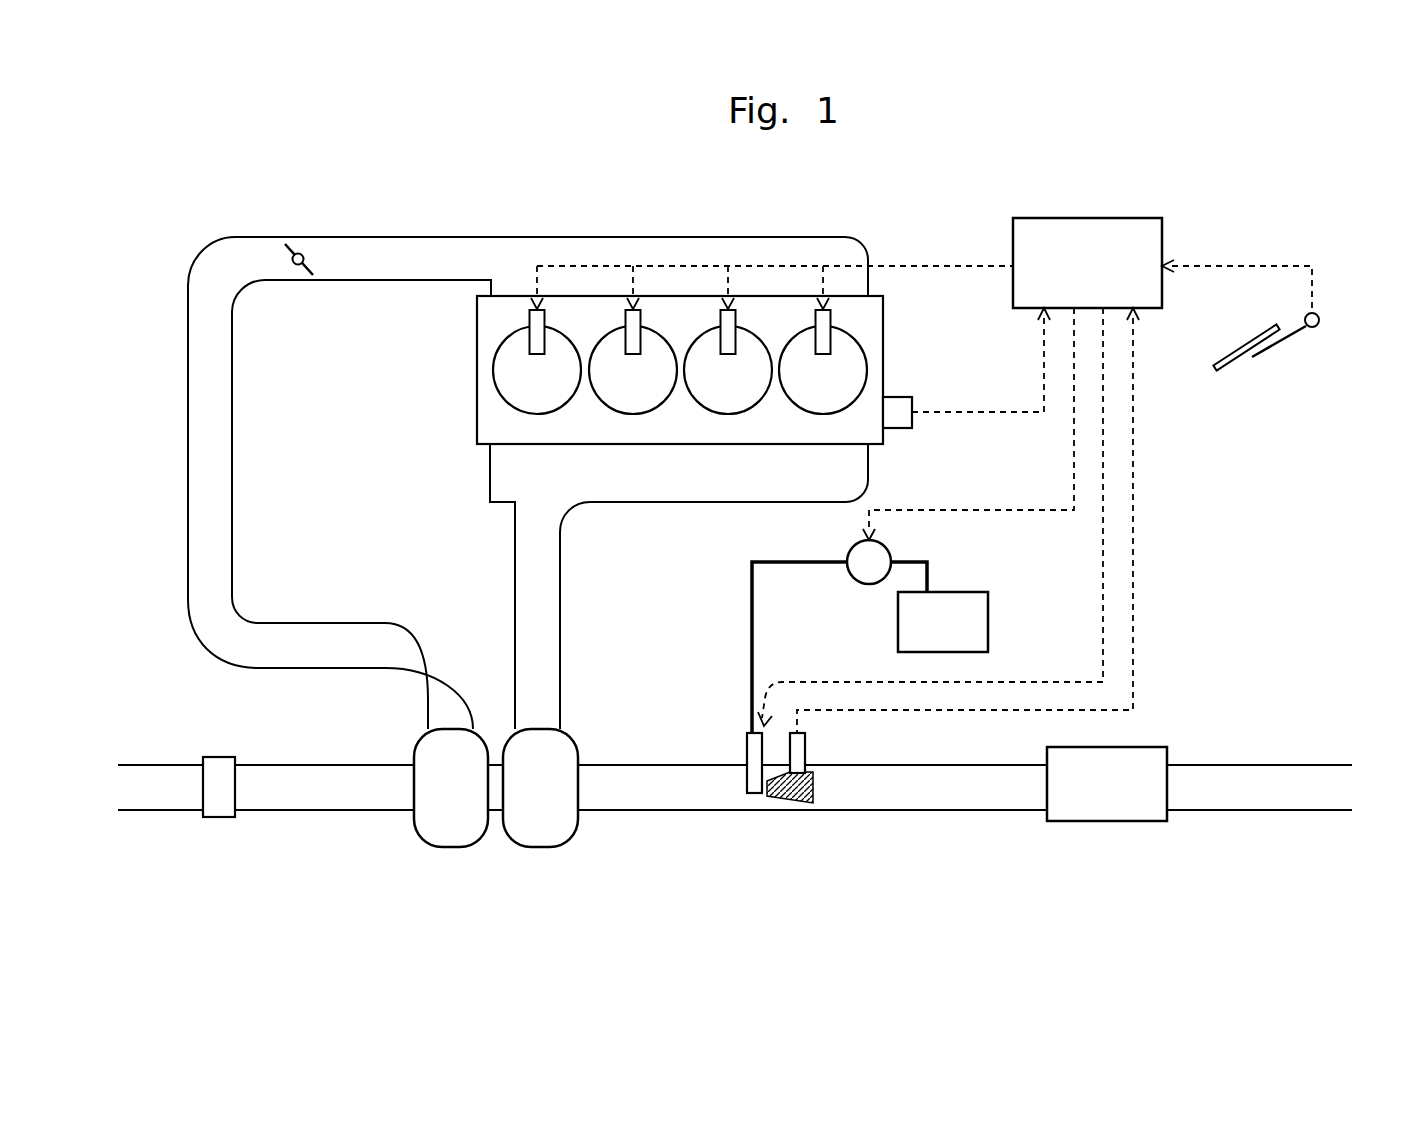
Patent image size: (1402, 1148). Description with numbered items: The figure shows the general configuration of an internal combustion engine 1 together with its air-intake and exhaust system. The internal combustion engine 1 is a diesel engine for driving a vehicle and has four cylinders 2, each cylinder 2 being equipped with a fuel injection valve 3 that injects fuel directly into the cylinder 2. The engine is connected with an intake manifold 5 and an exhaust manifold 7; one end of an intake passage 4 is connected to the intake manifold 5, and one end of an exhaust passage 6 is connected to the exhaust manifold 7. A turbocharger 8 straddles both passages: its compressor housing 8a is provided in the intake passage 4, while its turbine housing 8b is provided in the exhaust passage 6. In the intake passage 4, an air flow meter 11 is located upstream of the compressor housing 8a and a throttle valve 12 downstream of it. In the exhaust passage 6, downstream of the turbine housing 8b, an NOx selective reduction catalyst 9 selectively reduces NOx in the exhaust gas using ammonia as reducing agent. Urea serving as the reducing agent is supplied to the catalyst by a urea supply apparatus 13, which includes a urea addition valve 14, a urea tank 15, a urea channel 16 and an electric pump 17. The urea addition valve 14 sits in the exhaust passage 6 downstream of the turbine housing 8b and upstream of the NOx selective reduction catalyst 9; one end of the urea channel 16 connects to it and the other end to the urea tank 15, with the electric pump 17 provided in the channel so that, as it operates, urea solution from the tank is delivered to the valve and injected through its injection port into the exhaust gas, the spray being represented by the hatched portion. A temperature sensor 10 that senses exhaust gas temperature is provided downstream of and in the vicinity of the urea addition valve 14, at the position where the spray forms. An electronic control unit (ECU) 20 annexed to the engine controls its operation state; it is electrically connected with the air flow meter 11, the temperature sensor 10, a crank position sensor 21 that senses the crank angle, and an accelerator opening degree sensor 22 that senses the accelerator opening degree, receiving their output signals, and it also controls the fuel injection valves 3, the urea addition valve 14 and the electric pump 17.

The internal combustion engine 1 is at (477, 388).
The cylinder 2 is at (528, 412).
The fuel injection valve 3 is at (546, 314).
The intake passage 4 is at (186, 447).
The intake manifold 5 is at (722, 235).
The exhaust passage 6 is at (512, 623).
The exhaust manifold 7 is at (678, 503).
The turbocharger 8 is at (496, 839).
The compressor housing 8a is at (455, 847).
The turbine housing 8b is at (540, 815).
The NOx selective reduction catalyst 9 is at (1107, 821).
The temperature sensor 10 is at (805, 750).
The air flow meter 11 is at (220, 817).
The throttle valve 12 is at (293, 268).
The urea supply apparatus 13 is at (693, 593).
The urea addition valve 14 is at (745, 748).
The urea tank 15 is at (968, 592).
The urea channel 16 is at (750, 665).
The electric pump 17 is at (868, 585).
The electronic control unit (ECU) 20 is at (1135, 218).
The crank position sensor 21 is at (898, 397).
The accelerator opening degree sensor 22 is at (1314, 328).